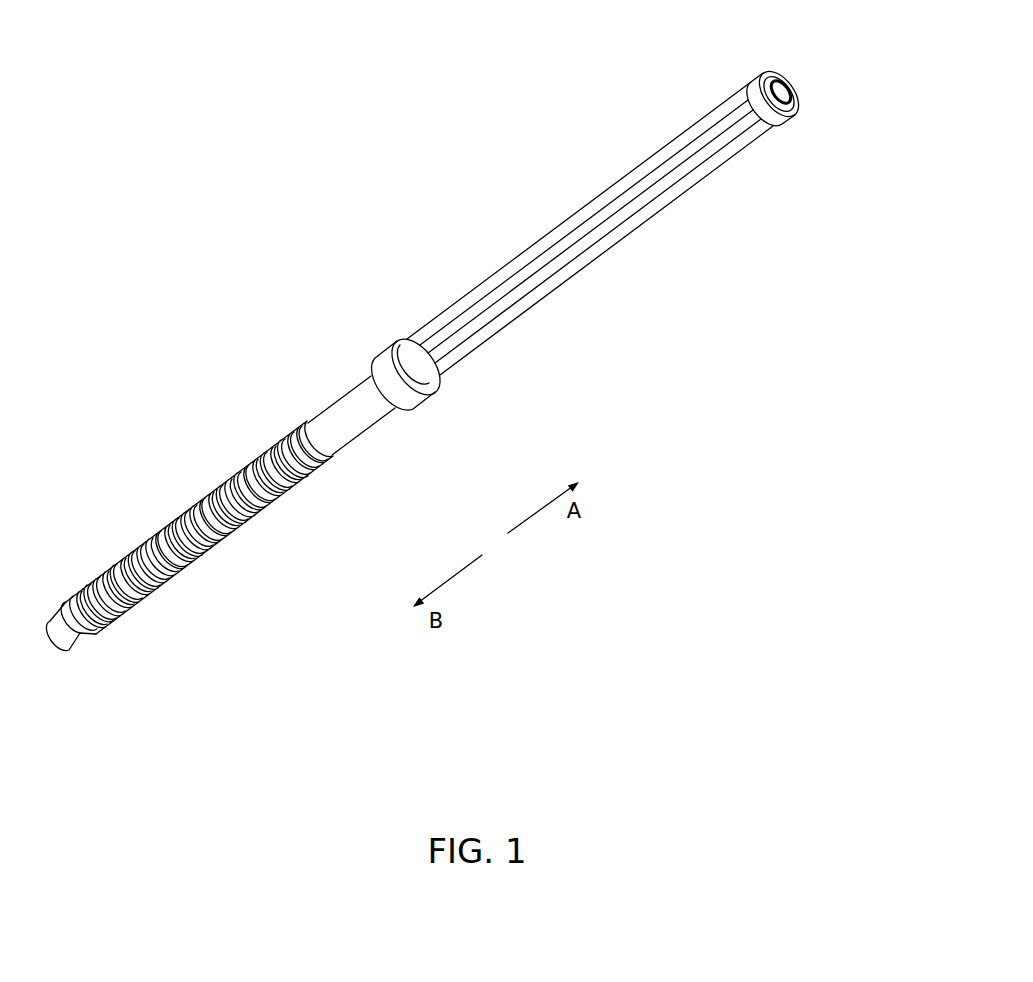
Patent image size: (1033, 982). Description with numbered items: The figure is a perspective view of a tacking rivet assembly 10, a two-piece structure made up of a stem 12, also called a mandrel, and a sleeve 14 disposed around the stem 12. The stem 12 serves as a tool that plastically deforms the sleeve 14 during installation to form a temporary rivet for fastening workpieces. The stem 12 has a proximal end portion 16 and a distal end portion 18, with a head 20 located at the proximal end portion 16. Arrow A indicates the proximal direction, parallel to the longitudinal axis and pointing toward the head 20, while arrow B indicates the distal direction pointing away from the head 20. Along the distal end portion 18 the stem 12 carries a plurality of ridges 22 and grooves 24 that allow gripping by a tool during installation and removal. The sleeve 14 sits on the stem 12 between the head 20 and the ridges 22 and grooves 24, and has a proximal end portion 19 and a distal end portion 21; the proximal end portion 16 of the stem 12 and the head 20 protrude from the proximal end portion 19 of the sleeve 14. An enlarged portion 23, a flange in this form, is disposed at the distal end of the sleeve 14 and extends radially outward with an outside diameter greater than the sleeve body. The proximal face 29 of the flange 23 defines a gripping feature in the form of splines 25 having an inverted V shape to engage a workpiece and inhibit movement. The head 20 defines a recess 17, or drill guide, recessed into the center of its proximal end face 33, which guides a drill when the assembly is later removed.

The tacking rivet assembly 10 is at (407, 224).
The stem 12 is at (333, 417).
The sleeve 14 is at (488, 300).
The proximal end portion 16 is at (745, 80).
The recess 17 is at (790, 90).
The distal end portion 18 is at (84, 665).
The proximal end portion 19 is at (758, 160).
The head 20 is at (780, 116).
The distal end portion 21 is at (493, 373).
The ridges 22 is at (67, 612).
The enlarged portion 23 is at (410, 400).
The grooves 24 is at (251, 524).
The splines 25 is at (404, 344).
The proximal face 29 is at (437, 397).
The proximal end face 33 is at (777, 85).